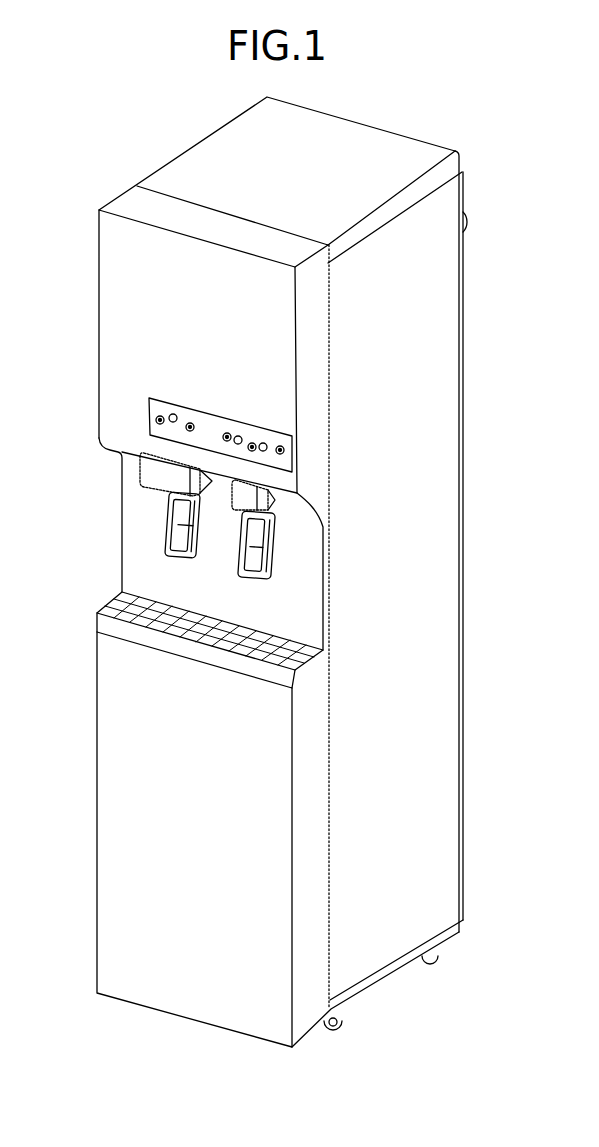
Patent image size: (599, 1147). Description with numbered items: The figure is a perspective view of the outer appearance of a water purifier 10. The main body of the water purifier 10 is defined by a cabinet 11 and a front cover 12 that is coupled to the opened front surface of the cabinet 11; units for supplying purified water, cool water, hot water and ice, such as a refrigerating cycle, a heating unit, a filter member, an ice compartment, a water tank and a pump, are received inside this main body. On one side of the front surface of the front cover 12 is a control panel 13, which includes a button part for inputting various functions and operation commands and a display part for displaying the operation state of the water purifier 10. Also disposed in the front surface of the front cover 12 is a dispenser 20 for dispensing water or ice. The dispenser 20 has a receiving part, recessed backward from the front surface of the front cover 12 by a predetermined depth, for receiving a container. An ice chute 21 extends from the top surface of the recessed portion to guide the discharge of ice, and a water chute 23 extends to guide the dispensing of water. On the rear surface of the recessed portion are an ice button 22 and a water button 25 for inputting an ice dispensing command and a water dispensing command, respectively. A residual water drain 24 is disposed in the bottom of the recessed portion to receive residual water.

The water purifier 10 is at (58, 178).
The cabinet 11 is at (430, 757).
The front cover 12 is at (120, 833).
The control panel 13 is at (212, 423).
The dispenser 20 is at (112, 563).
The ice chute 21 is at (152, 472).
The ice button 22 is at (180, 537).
The water chute 23 is at (247, 498).
The residual water drain 24 is at (265, 633).
The water button 25 is at (258, 573).